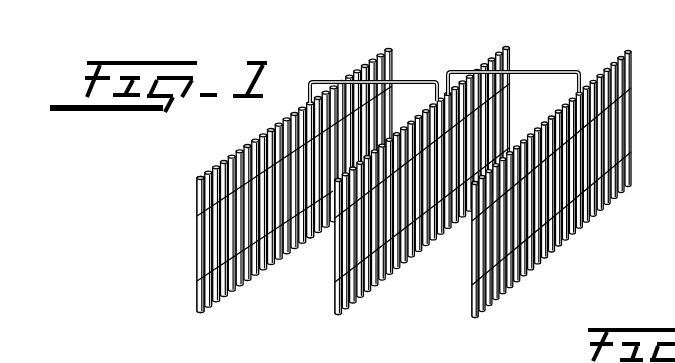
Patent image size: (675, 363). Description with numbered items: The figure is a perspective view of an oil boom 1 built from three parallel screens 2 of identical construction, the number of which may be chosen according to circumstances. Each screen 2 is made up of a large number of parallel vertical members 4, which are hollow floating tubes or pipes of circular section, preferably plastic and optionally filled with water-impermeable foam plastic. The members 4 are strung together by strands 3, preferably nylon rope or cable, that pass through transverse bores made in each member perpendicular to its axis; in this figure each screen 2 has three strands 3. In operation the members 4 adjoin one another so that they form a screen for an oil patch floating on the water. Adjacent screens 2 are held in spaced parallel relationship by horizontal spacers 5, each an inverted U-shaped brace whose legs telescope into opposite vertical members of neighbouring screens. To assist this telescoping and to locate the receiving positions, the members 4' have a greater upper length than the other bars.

The oil boom 1 is at (388, 172).
The screen 2 is at (238, 273).
The strand 3 is at (197, 283).
The vertical member 4 is at (312, 257).
The vertical member with greater upper length 4' is at (286, 167).
The horizontal spacer 5 is at (479, 72).